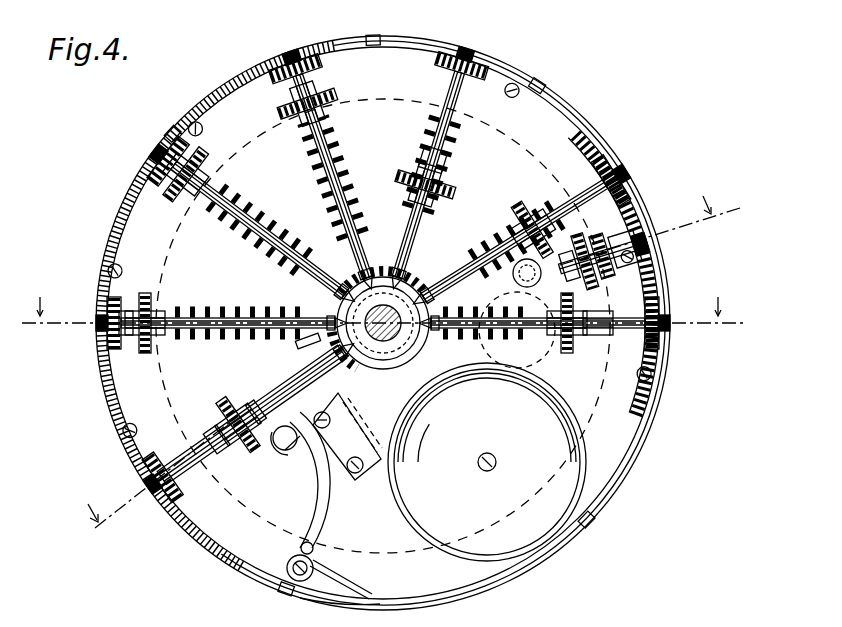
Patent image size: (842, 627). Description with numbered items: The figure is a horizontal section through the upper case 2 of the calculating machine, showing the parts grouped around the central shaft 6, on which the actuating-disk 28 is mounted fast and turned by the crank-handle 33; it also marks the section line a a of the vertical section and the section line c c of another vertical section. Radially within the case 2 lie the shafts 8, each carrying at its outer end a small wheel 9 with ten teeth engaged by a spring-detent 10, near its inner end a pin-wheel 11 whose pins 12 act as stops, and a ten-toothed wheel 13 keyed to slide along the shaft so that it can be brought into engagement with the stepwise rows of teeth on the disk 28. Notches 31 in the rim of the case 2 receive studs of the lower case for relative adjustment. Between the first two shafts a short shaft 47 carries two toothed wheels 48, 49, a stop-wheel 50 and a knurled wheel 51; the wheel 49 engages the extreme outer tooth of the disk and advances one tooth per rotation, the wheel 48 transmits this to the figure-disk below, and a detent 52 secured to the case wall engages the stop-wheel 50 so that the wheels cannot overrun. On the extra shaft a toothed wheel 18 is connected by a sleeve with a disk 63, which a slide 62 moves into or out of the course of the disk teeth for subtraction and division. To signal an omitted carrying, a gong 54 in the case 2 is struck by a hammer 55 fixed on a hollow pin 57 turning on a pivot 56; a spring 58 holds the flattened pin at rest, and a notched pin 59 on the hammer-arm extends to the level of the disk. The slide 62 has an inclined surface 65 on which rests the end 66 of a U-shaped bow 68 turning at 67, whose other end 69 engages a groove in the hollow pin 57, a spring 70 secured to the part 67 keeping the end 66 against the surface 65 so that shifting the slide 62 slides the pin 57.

The case 2 is at (396, 44).
The shaft 6 is at (386, 330).
The shaft 8 is at (418, 146).
The small wheel 9 is at (498, 66).
The spring-detent 10 is at (193, 118).
The pin-wheel 11 is at (386, 255).
The pins 12 is at (340, 270).
The ten-toothed wheel 13 is at (292, 118).
The toothed wheel 18 is at (300, 345).
The actuating-disk 28 is at (520, 142).
The notches 31 is at (175, 122).
The crank-handle 33 is at (514, 282).
The short shaft 47 is at (568, 258).
The toothed wheel 48 is at (655, 226).
The toothed wheel 49 is at (578, 240).
The stop-wheel 50 is at (605, 244).
The knurled wheel 51 is at (568, 268).
The detent 52 is at (652, 258).
The gong 54 is at (487, 462).
The hammer 55 is at (287, 452).
The pivot 56 is at (345, 598).
The hollow pin 57 is at (300, 582).
The spring 58 is at (360, 588).
The pin 59 is at (318, 540).
The slide 62 is at (258, 412).
The disk 63 is at (232, 416).
The inclined surface 65 is at (282, 452).
The end of bow 66 is at (222, 422).
The turning point of bow 67 is at (360, 430).
The U-shaped bow 68 is at (362, 482).
The end of bow 69 is at (300, 550).
The spring 70 is at (322, 430).
The section line a a is at (385, 316).
The section line c c is at (415, 371).